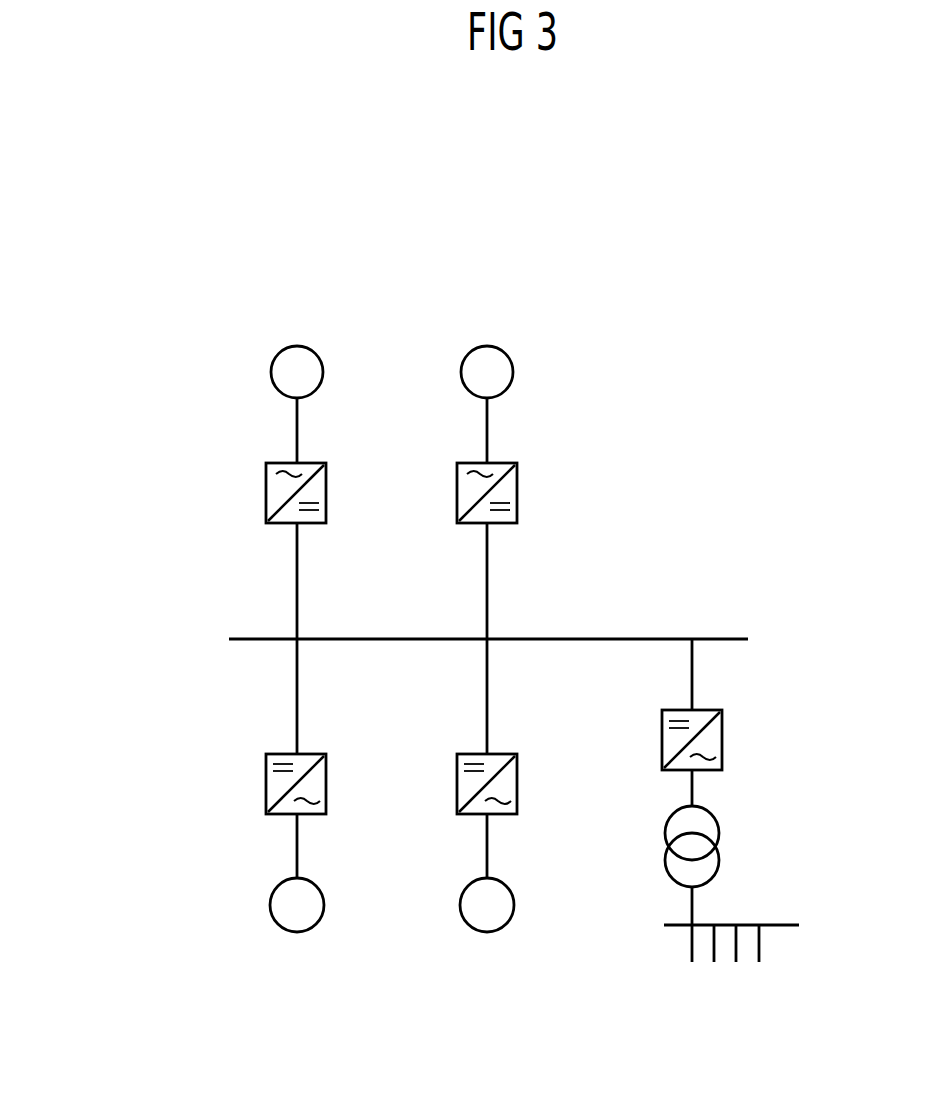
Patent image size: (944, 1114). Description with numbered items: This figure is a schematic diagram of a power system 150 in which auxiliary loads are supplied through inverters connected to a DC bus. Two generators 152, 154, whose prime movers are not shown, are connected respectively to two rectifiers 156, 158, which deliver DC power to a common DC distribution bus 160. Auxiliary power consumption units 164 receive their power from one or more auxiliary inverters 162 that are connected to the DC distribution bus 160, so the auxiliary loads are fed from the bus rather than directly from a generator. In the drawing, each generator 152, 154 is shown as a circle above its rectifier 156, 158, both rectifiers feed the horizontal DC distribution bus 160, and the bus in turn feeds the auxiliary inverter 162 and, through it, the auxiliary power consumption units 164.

The power system 150 is at (163, 178).
The generator 152 is at (297, 346).
The generator 154 is at (487, 346).
The rectifier 156 is at (278, 525).
The rectifier 158 is at (469, 525).
The DC distribution bus 160 is at (592, 639).
The auxiliary inverter 162 is at (710, 710).
The auxiliary power consumption units 164 is at (773, 925).